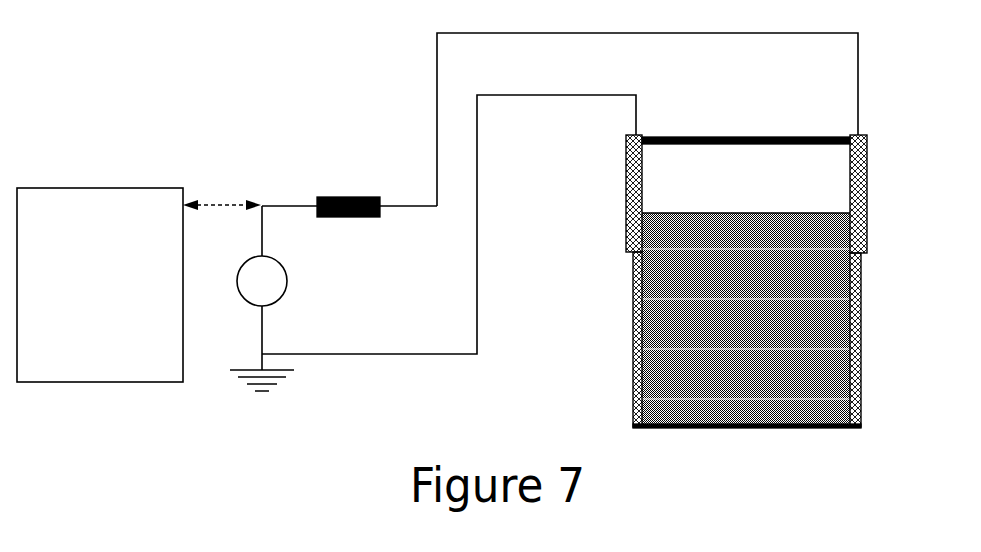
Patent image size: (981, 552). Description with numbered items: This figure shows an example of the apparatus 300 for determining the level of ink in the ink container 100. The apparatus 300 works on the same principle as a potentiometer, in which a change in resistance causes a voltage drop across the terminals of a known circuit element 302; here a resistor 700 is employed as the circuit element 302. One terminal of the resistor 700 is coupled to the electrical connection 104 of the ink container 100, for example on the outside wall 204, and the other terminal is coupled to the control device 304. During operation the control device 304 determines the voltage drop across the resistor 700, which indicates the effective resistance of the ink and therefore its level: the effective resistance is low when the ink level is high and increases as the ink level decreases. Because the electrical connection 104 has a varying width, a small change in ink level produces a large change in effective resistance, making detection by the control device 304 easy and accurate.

The ink container 100 is at (757, 256).
The electrical connection 104 is at (863, 288).
The outside wall 204 is at (632, 298).
The apparatus 300 is at (513, 212).
The circuit element 302 is at (349, 178).
The control device 304 is at (114, 305).
The resistor 700 is at (364, 196).